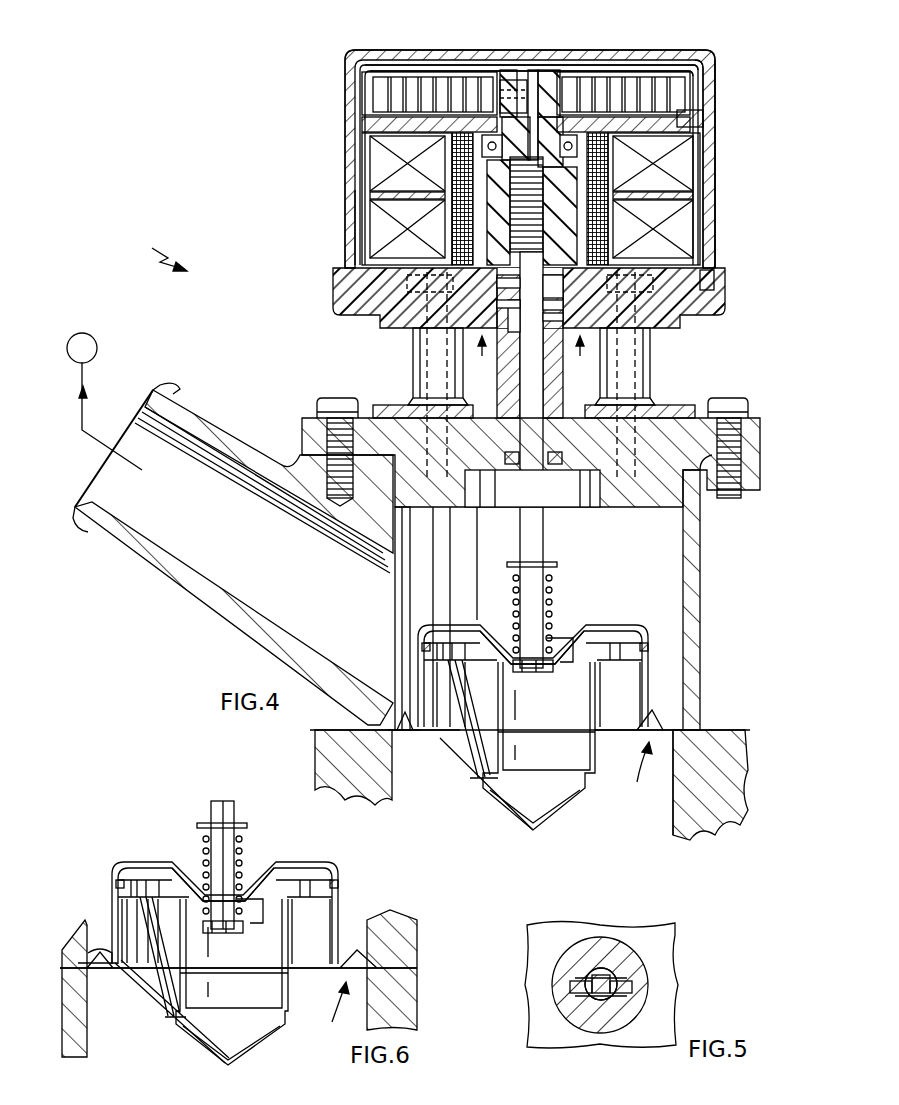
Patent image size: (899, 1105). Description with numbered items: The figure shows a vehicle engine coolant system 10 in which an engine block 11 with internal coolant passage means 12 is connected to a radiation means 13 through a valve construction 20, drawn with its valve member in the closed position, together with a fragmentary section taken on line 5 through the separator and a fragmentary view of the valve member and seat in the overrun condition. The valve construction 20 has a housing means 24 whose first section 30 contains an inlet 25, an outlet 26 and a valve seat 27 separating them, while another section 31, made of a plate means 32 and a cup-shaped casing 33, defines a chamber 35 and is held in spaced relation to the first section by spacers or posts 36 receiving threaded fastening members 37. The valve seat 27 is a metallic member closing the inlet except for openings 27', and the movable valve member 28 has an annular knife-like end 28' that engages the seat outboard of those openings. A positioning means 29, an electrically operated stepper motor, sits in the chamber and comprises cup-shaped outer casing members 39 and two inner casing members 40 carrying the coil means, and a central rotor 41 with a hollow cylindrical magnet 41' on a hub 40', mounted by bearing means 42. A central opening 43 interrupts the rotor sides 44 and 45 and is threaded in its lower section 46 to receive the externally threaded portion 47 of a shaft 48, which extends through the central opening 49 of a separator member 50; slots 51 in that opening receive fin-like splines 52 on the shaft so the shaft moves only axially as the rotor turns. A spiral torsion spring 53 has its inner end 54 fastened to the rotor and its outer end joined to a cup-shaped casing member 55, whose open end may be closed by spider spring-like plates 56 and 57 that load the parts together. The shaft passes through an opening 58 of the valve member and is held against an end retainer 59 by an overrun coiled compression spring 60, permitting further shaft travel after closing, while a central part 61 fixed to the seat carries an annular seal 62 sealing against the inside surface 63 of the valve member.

In FIG. 4, the section line 5 is at (531, 358).
In FIG. 4, the vehicle engine coolant system 10 is at (154, 248).
In FIG. 4, the engine block 11 is at (738, 772).
In FIG. 6, the engine block 11 is at (254, 990).
In FIG. 4, the internal coolant passage means 12 is at (672, 818).
In FIG. 4, the radiation means 13 is at (98, 341).
In FIG. 4, the valve construction 20 is at (737, 67).
In FIG. 4, the housing means 24 is at (703, 571).
In FIG. 4, the inlet 25 is at (635, 776).
In FIG. 6, the inlet 25 is at (330, 1013).
In FIG. 4, the outlet 26 is at (250, 610).
In FIG. 4, the valve seat 27 is at (567, 701).
In FIG. 6, the valve seat 27 is at (249, 936).
In FIG. 4, the openings 27' is at (552, 746).
In FIG. 6, the openings 27' is at (254, 982).
In FIG. 4, the valve member 28 is at (585, 676).
In FIG. 6, the valve member 28 is at (261, 913).
In FIG. 4, the annular knife-like end 28' is at (432, 652).
In FIG. 6, the annular knife-like end 28' is at (118, 964).
In FIG. 4, the positioning means 29 is at (703, 190).
In FIG. 4, the first section 30 is at (698, 546).
In FIG. 6, the first section 30 is at (400, 941).
In FIG. 4, the another section 31 is at (346, 135).
In FIG. 4, the plate means 32 is at (706, 315).
In FIG. 5, the plate means 32 is at (550, 1030).
In FIG. 4, the cup-shaped casing 33 is at (716, 200).
In FIG. 4, the chamber 35 is at (354, 202).
In FIG. 4, the spacers or posts 36 is at (652, 371).
In FIG. 4, the threaded fastening members 37 is at (650, 348).
In FIG. 4, the outer casing members 39 is at (712, 284).
In FIG. 4, the inner casing members 40 is at (686, 199).
In FIG. 4, the hub 40' is at (381, 199).
In FIG. 4, the central rotor 41 is at (645, 163).
In FIG. 4, the hollow cylindrical magnet 41' is at (626, 199).
In FIG. 4, the bearing means 42 is at (455, 236).
In FIG. 4, the central opening 43 is at (540, 74).
In FIG. 4, the side 44 is at (560, 296).
In FIG. 4, the side 45 is at (556, 72).
In FIG. 4, the lower section 46 is at (455, 219).
In FIG. 4, the externally threaded portion 47 is at (586, 226).
In FIG. 4, the shaft 48 is at (548, 377).
In FIG. 6, the shaft 48 is at (213, 812).
In FIG. 5, the shaft 48 is at (597, 968).
In FIG. 4, the central opening 49 is at (520, 373).
In FIG. 5, the central opening 49 is at (583, 1000).
In FIG. 4, the separator member 50 is at (497, 318).
In FIG. 5, the separator member 50 is at (625, 950).
In FIG. 4, the slots 51 is at (560, 306).
In FIG. 5, the slots 51 is at (632, 987).
In FIG. 4, the splines 52 is at (563, 320).
In FIG. 5, the splines 52 is at (640, 975).
In FIG. 4, the spiral torsion spring 53 is at (438, 96).
In FIG. 4, the inner end 54 is at (513, 84).
In FIG. 4, the cup-shaped casing member 55 is at (362, 106).
In FIG. 4, the spider spring-like plate 56 is at (622, 72).
In FIG. 4, the spider spring-like plate 57 is at (670, 64).
In FIG. 4, the opening 58 is at (556, 636).
In FIG. 6, the opening 58 is at (246, 897).
In FIG. 4, the end retainer 59 is at (546, 675).
In FIG. 6, the end retainer 59 is at (237, 933).
In FIG. 4, the overrun coiled compression spring 60 is at (553, 597).
In FIG. 6, the overrun coiled compression spring 60 is at (205, 843).
In FIG. 4, the central part 61 is at (455, 691).
In FIG. 6, the central part 61 is at (145, 926).
In FIG. 4, the annular seal 62 is at (422, 645).
In FIG. 6, the annular seal 62 is at (116, 882).
In FIG. 4, the inside surface 63 is at (641, 686).
In FIG. 6, the inside surface 63 is at (334, 925).